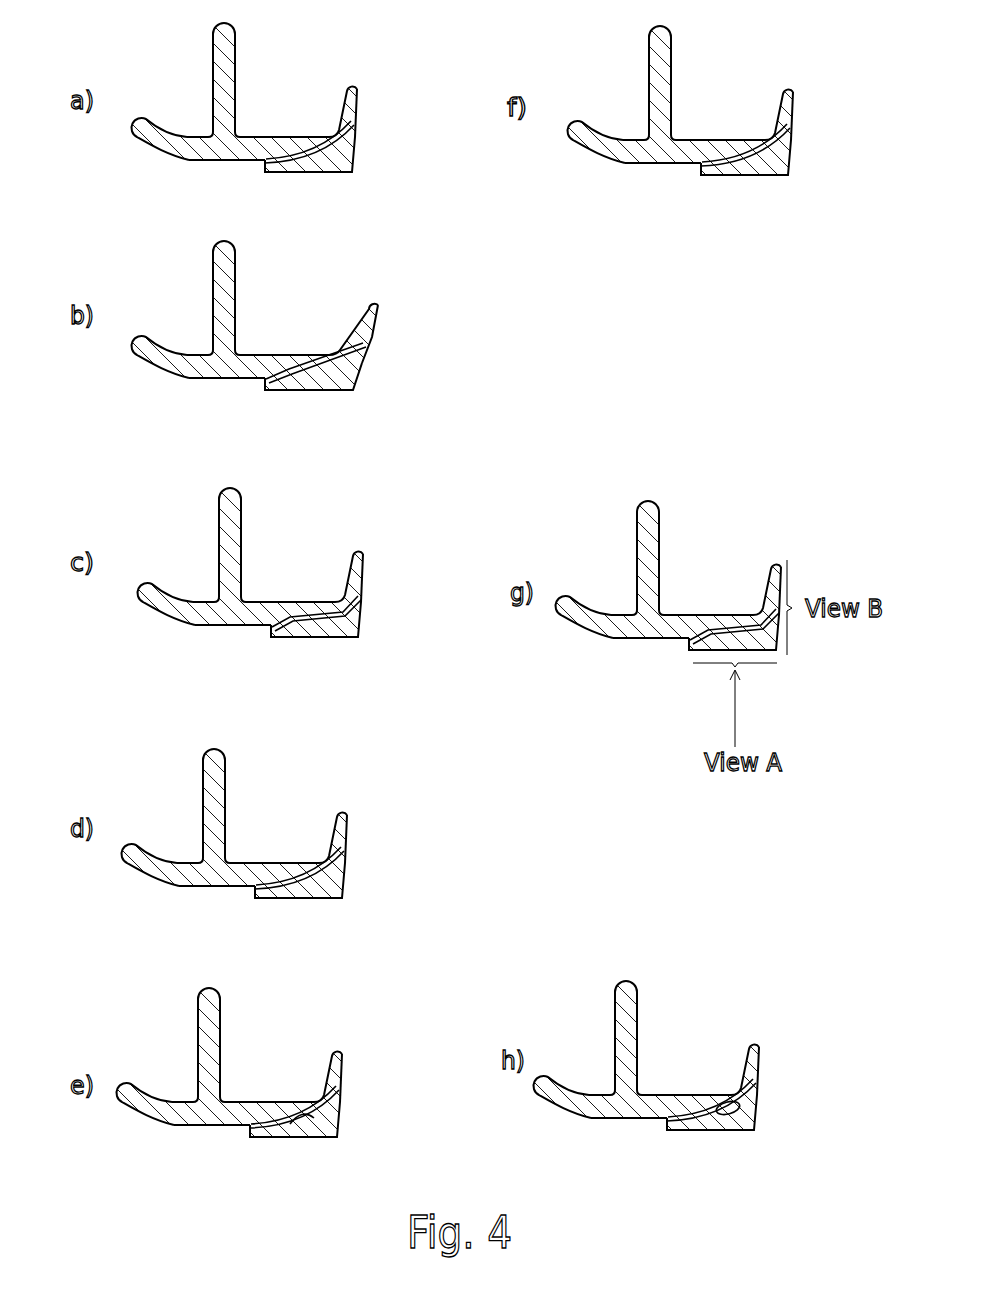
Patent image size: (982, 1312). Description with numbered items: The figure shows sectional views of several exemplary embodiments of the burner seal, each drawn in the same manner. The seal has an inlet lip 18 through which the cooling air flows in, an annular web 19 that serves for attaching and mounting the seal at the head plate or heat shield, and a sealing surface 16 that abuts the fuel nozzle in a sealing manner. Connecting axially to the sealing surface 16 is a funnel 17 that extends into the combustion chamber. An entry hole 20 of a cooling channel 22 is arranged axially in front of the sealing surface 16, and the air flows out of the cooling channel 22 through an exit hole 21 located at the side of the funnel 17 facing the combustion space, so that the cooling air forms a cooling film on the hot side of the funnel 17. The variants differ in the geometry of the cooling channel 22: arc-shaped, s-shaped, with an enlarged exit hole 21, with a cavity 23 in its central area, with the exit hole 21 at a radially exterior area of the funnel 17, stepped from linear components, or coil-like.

The sealing surface 16 is at (527, 674).
The funnel 17 is at (583, 551).
The inlet lip 18 is at (354, 580).
The annular web 19 is at (476, 560).
The entry hole 20 is at (460, 658).
The exit hole 21 is at (612, 609).
The cooling channel 22 is at (552, 649).
The cavity 23 is at (287, 1163).